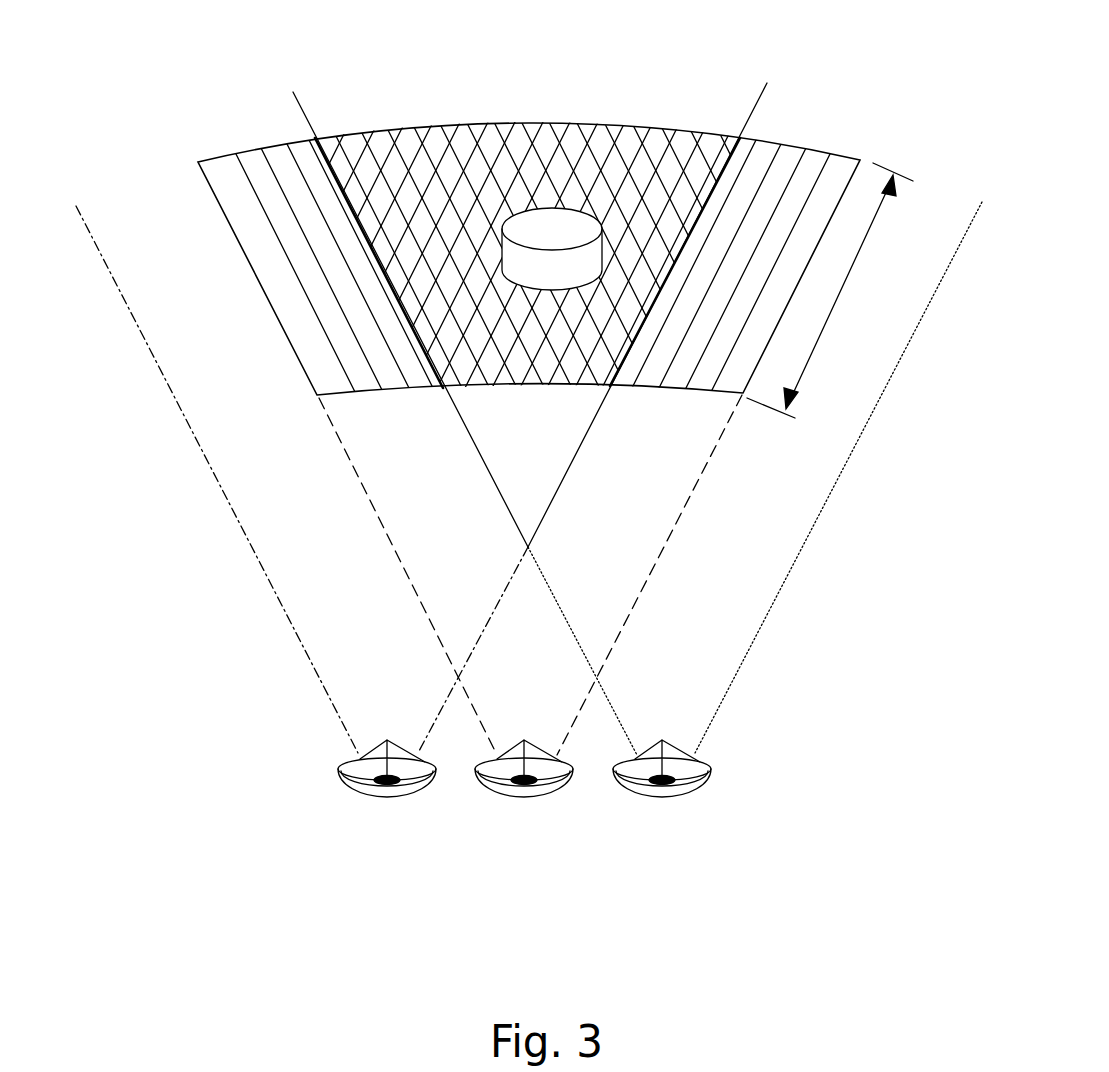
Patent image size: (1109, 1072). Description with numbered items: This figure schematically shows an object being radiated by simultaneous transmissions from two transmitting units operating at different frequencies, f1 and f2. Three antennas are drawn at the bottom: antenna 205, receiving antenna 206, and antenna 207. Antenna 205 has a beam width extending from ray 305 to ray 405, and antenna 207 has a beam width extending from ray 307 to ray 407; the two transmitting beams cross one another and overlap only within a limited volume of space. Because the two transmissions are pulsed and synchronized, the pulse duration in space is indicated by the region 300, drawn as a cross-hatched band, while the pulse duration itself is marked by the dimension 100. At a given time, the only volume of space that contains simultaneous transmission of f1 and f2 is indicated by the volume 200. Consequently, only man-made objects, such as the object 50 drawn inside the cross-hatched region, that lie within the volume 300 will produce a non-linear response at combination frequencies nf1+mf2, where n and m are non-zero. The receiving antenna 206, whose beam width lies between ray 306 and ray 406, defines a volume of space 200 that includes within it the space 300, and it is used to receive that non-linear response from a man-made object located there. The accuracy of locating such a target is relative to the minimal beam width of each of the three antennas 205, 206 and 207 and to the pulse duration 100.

The volume of space with simultaneous transmission 200 is at (255, 165).
The pulse duration in space 300 is at (640, 163).
The object 50 is at (550, 230).
The pulse duration 100 is at (822, 333).
The beam width limit of antenna 205 305 is at (252, 551).
The beam width limit of receiving antenna 206 306 is at (400, 560).
The beam width limit of antenna 207 307 is at (498, 493).
The beam width limit of antenna 205 405 is at (557, 493).
The beam width limit of receiving antenna 206 406 is at (657, 565).
The beam width limit of antenna 207 407 is at (775, 602).
The antenna 205 is at (362, 797).
The receiving antenna 206 is at (527, 797).
The antenna 207 is at (667, 797).